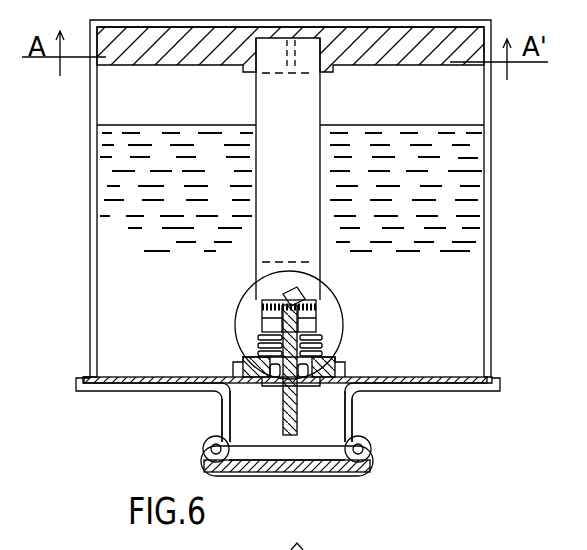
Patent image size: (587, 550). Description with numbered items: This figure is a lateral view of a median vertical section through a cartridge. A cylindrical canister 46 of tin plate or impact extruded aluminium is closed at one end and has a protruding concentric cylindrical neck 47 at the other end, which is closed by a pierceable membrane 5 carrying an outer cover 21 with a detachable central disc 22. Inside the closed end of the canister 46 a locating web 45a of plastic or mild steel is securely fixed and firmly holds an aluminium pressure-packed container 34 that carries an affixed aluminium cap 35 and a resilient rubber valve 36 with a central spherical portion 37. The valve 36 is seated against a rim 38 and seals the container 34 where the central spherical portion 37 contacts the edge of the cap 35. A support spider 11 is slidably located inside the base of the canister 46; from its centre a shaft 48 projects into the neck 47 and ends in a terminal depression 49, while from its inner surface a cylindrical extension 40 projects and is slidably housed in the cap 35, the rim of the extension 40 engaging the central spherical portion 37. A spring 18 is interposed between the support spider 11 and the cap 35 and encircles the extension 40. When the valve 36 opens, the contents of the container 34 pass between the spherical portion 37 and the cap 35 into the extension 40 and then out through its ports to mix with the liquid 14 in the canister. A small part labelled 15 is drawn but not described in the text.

The pierceable membrane 5 is at (300, 468).
The support spider 11 is at (350, 367).
The liquid 14 is at (480, 183).
The nut 15 is at (307, 385).
The spring 18 is at (322, 340).
The outer cover 21 is at (377, 468).
The detachable central disc 22 is at (272, 478).
The pressure-packed container 34 is at (288, 169).
The cap 35 is at (328, 320).
The valve 36 is at (326, 305).
The central spherical portion 37 is at (314, 300).
The rim 38 is at (258, 300).
The cylindrical extension 40 is at (258, 336).
The locating web 45a is at (388, 50).
The canister 46 is at (494, 117).
The neck 47 is at (355, 402).
The shaft 48 is at (292, 412).
The terminal depression 49 is at (290, 432).